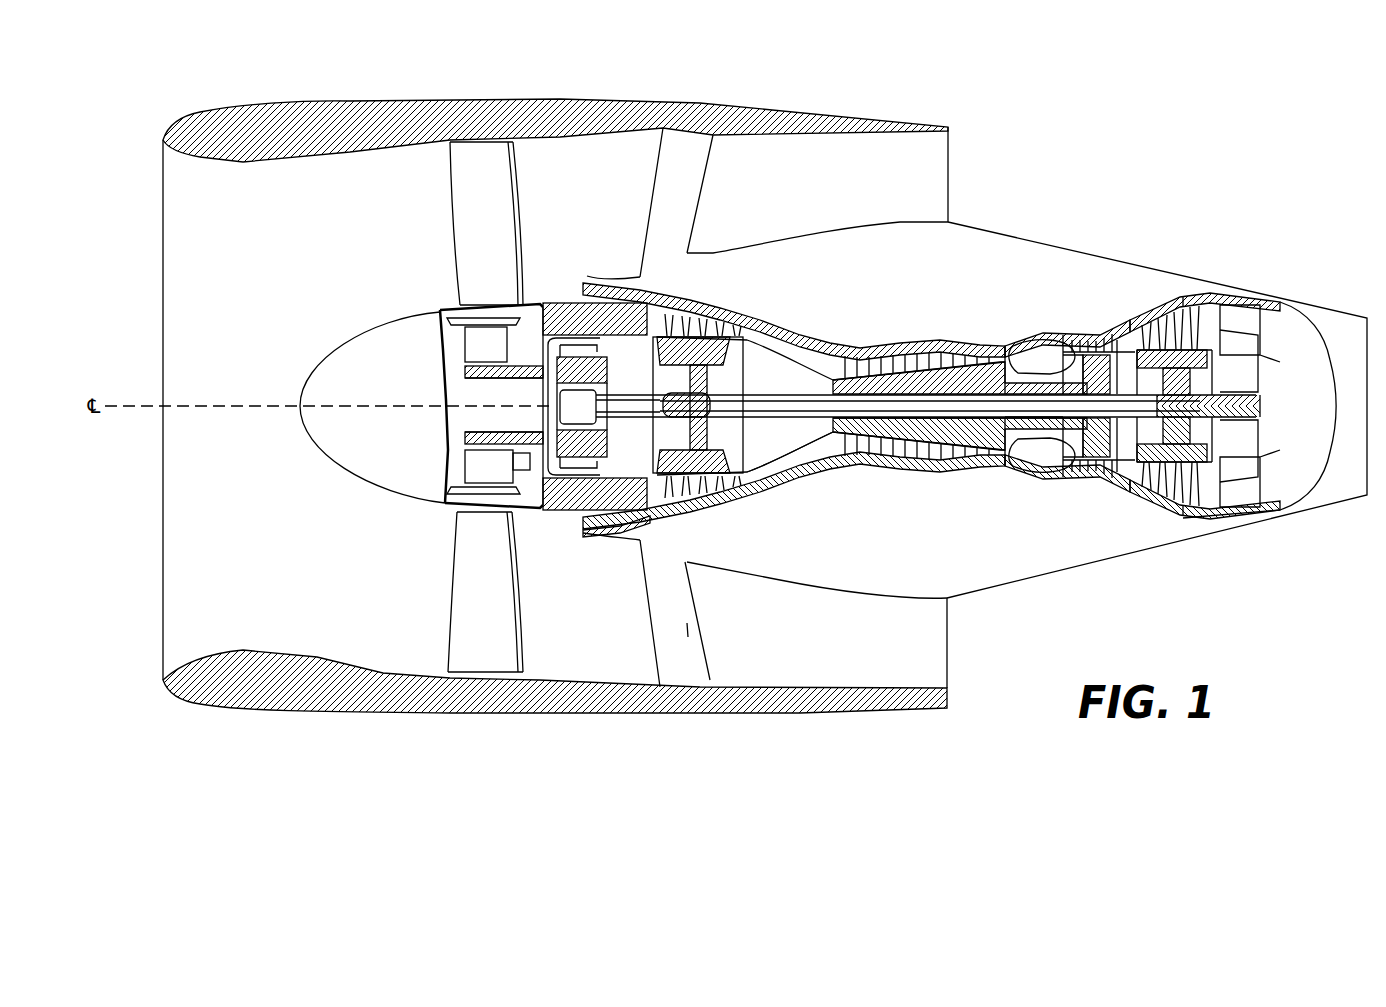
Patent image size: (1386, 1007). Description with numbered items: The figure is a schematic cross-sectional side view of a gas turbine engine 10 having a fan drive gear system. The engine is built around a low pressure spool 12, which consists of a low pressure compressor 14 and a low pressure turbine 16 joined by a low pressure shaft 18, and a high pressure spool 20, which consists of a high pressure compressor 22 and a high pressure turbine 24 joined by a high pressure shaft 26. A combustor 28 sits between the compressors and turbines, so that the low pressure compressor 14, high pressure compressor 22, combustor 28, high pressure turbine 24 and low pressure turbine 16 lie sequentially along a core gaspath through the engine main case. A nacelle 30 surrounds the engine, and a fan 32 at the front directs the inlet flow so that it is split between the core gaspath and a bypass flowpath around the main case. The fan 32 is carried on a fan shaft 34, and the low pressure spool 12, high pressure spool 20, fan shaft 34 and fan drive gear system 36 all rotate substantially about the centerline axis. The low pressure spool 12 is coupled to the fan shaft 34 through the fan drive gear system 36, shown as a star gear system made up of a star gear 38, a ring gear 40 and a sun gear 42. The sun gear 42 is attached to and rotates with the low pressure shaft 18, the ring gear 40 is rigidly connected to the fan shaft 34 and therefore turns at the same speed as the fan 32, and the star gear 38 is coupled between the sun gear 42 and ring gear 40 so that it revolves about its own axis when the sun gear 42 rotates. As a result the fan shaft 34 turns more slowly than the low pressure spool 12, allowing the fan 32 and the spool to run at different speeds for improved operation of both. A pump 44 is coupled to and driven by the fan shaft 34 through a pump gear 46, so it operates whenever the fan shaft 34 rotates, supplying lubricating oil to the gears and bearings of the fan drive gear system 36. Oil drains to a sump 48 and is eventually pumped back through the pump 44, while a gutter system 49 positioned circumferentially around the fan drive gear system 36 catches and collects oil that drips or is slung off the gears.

The gas turbine engine 10 is at (790, 84).
The low pressure spool 12 is at (798, 428).
The low pressure compressor 14 is at (732, 300).
The low pressure turbine 16 is at (1181, 290).
The low pressure shaft 18 is at (765, 425).
The high pressure spool 20 is at (1057, 440).
The high pressure compressor 22 is at (952, 344).
The high pressure turbine 24 is at (1100, 330).
The high pressure shaft 26 is at (1003, 425).
The combustor 28 is at (1045, 327).
The nacelle 30 is at (588, 272).
The fan 32 is at (475, 242).
The fan shaft 34 is at (522, 312).
The fan drive gear system 36 is at (546, 405).
The star gear 38 is at (604, 366).
The ring gear 40 is at (573, 470).
The sun gear 42 is at (609, 500).
The pump 44 is at (517, 472).
The pump gear 46 is at (533, 490).
The sump 48 is at (637, 516).
The gutter system 49 is at (586, 345).